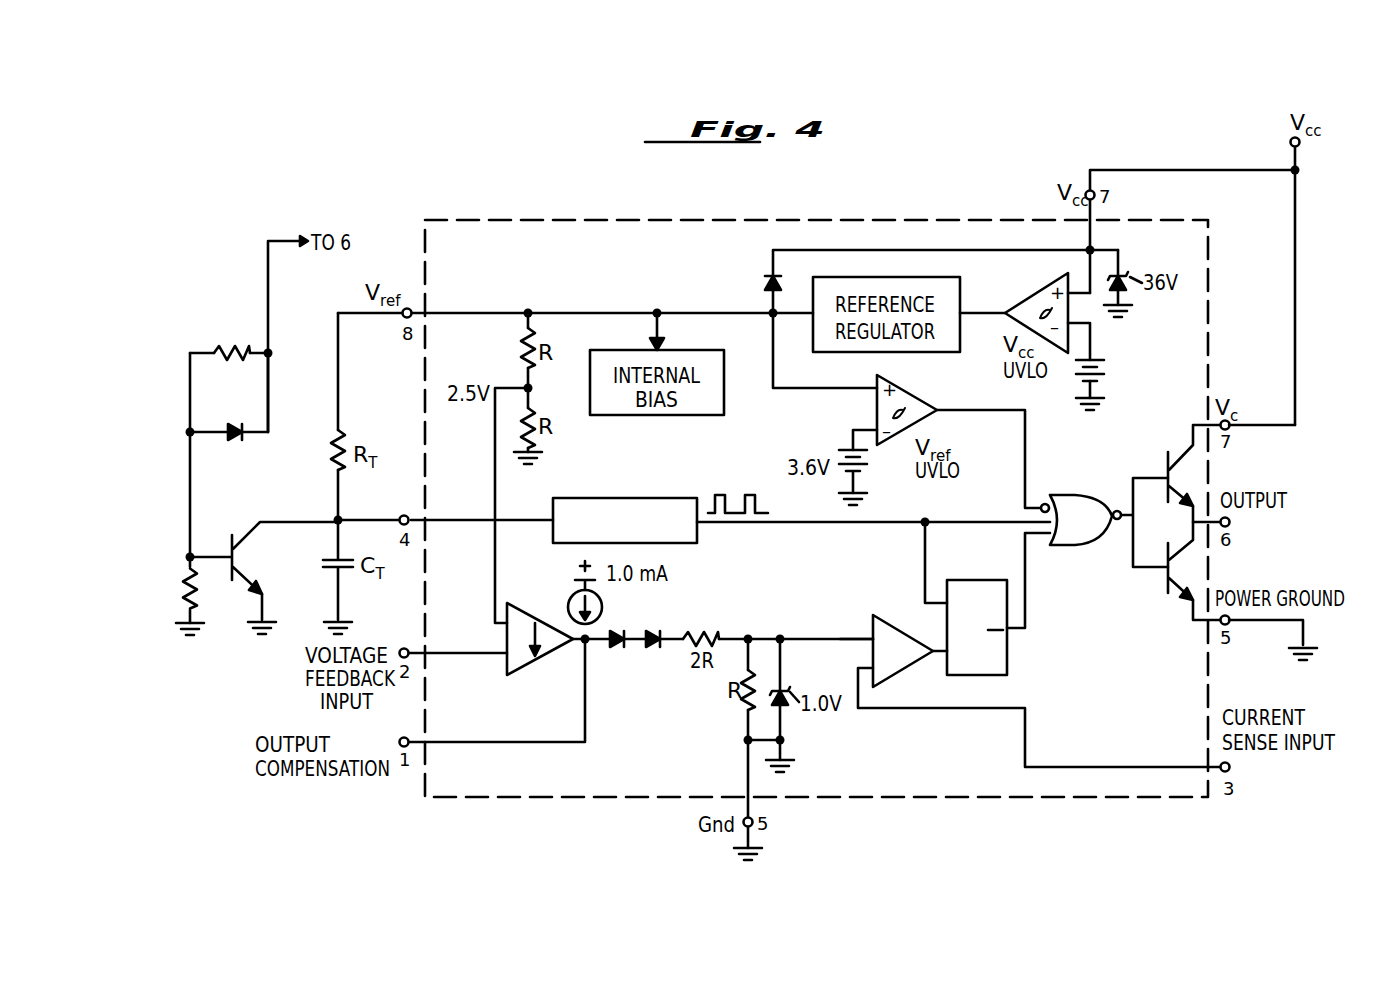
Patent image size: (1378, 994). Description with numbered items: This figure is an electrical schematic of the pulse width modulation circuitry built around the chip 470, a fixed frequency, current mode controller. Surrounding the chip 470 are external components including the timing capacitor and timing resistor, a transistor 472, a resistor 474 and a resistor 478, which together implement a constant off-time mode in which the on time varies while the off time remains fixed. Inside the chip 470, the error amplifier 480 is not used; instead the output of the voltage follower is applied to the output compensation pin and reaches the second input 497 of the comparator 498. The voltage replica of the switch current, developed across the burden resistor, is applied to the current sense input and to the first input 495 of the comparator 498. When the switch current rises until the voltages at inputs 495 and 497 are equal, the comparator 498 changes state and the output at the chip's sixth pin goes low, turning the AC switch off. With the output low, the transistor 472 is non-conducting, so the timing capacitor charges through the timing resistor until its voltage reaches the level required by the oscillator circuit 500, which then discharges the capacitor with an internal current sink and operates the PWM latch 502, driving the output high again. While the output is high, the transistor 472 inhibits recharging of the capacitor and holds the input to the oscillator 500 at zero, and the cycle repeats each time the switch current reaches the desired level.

The chip 470 is at (774, 220).
The transistor 472 is at (212, 557).
The resistor 474 is at (233, 352).
The resistor 478 is at (184, 590).
The error amplifier 480 is at (507, 640).
The first input of the comparator 495 is at (857, 668).
The second input of the comparator 497 is at (850, 637).
The comparator 498 is at (890, 620).
The oscillator circuit 500 is at (610, 498).
The PWM latch 502 is at (980, 590).